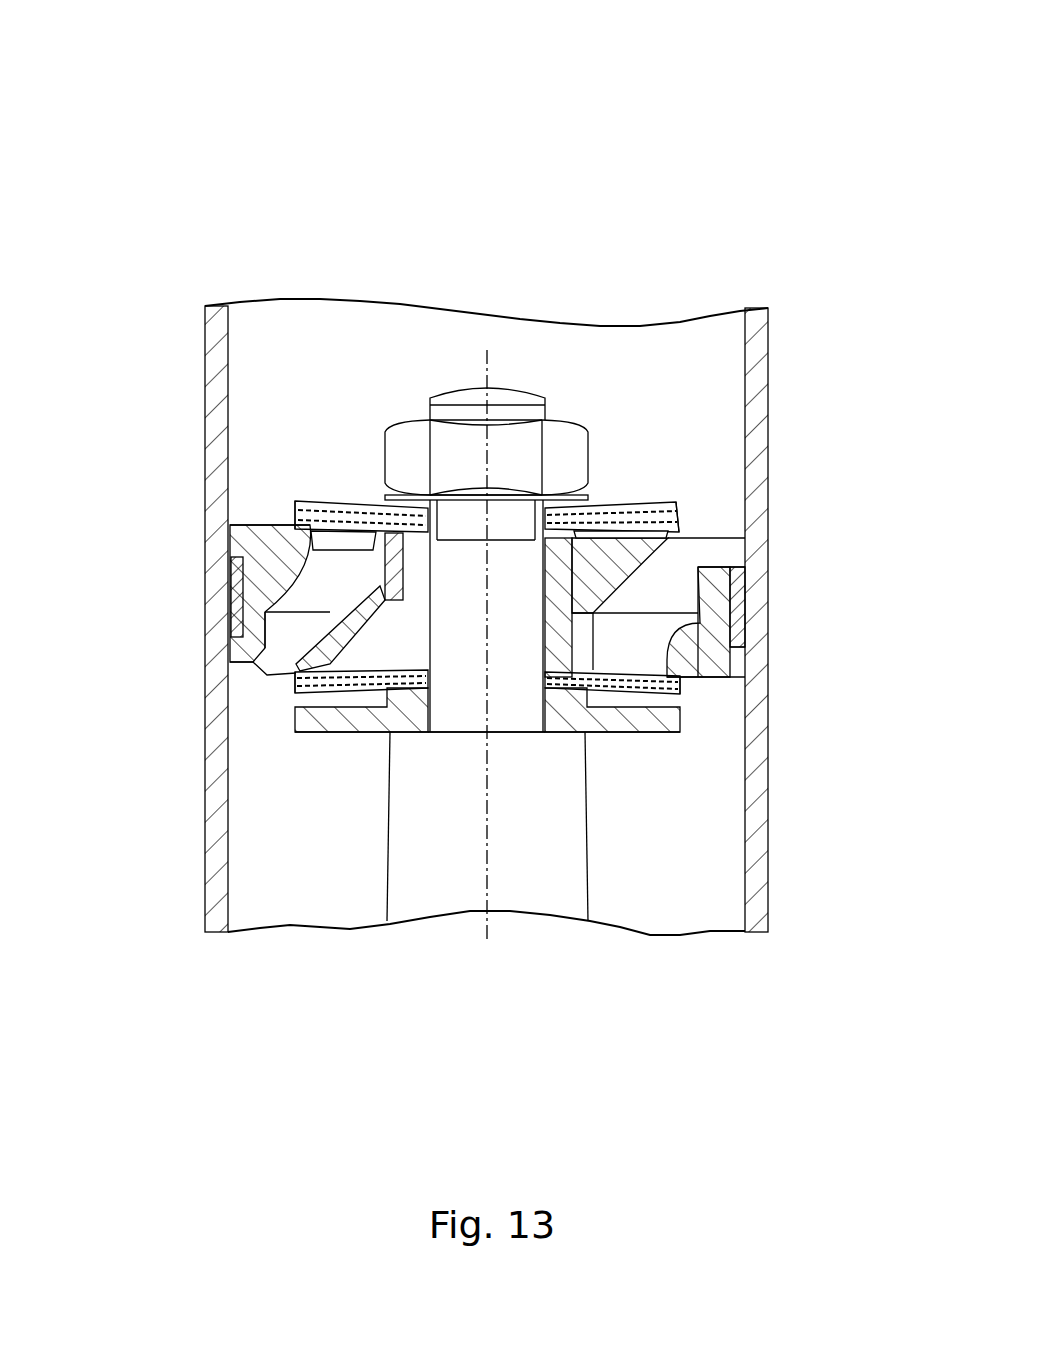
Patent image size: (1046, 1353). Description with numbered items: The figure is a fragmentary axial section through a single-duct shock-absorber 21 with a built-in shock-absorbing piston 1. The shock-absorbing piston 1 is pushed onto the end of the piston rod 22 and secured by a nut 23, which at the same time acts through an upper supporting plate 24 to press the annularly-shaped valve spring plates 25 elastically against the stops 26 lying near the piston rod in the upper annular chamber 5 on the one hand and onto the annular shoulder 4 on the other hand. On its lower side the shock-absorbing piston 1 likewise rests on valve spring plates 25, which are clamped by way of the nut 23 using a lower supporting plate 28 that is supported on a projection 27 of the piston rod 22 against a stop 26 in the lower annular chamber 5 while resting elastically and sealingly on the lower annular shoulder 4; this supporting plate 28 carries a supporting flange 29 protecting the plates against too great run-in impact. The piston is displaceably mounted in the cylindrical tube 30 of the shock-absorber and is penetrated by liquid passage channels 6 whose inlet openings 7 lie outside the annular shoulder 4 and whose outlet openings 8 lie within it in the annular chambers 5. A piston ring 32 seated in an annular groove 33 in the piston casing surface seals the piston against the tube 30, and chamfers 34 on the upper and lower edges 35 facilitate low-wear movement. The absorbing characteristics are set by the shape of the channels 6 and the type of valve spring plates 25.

The shock-absorbing piston 1 is at (645, 597).
The annular shoulder 4 is at (669, 515).
The annular chamber 5 is at (621, 507).
The liquid passage channel 6 is at (307, 593).
The inlet opening 7 is at (277, 663).
The outlet opening 8 is at (345, 545).
The single-duct shock-absorber 21 is at (713, 242).
The piston rod 22 is at (467, 832).
The nut 23 is at (458, 453).
The supporting plate 24 is at (566, 497).
The valve spring plate 25 is at (323, 502).
The stop 26 is at (378, 583).
The projection 27 is at (397, 690).
The supporting plate 28 is at (577, 690).
The supporting flange 29 is at (364, 695).
The cylindrical tube 30 is at (237, 637).
The piston ring 32 is at (235, 610).
The annular groove 33 is at (230, 598).
The chamfer 34 is at (232, 524).
The edge 35 is at (287, 527).